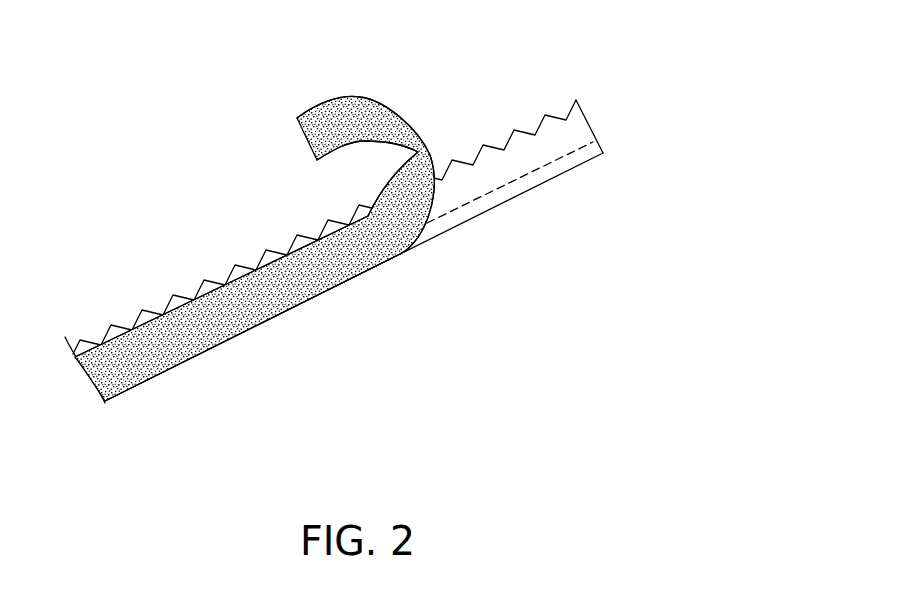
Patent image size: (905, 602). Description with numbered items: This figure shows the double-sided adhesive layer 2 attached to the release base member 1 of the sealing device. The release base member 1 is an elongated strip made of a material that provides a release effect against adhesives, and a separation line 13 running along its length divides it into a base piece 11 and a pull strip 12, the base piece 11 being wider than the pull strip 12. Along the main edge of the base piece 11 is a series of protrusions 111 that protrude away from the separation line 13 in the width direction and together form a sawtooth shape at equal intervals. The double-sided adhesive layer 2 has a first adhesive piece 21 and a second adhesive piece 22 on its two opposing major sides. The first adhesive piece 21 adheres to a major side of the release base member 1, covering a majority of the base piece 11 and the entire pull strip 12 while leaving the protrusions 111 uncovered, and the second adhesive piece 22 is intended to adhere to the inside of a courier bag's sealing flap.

The release base member 1 is at (379, 224).
The base piece 11 is at (559, 138).
The protrusions 111 is at (485, 152).
The pull strip 12 is at (527, 178).
The separation line 13 is at (573, 152).
The double-sided adhesive layer 2 is at (254, 210).
The first adhesive piece 21 is at (353, 110).
The second adhesive piece 22 is at (275, 297).